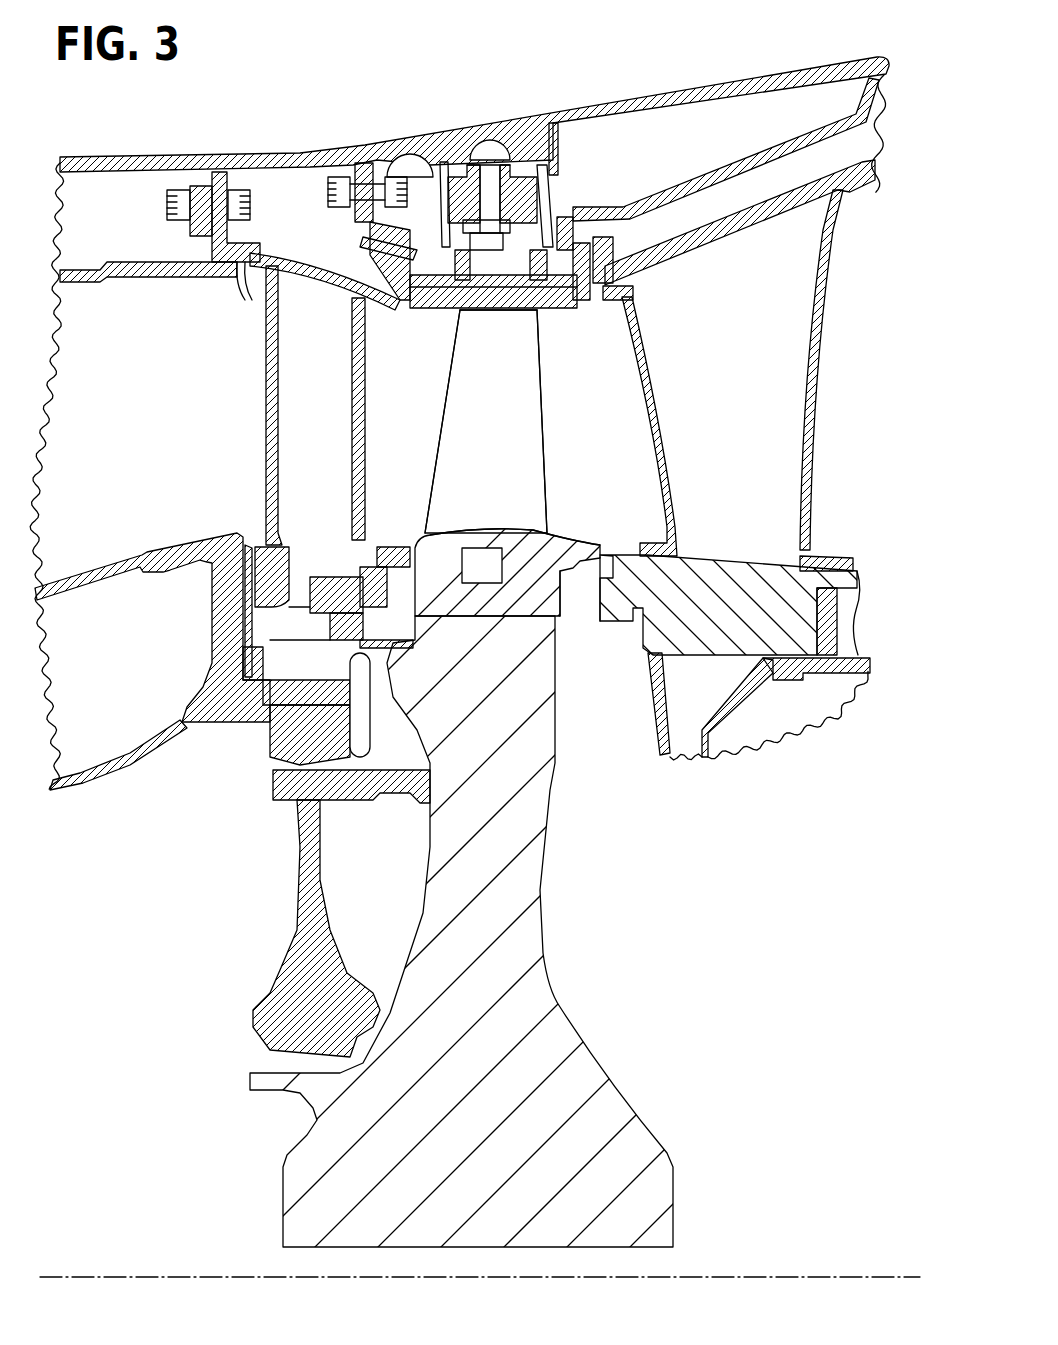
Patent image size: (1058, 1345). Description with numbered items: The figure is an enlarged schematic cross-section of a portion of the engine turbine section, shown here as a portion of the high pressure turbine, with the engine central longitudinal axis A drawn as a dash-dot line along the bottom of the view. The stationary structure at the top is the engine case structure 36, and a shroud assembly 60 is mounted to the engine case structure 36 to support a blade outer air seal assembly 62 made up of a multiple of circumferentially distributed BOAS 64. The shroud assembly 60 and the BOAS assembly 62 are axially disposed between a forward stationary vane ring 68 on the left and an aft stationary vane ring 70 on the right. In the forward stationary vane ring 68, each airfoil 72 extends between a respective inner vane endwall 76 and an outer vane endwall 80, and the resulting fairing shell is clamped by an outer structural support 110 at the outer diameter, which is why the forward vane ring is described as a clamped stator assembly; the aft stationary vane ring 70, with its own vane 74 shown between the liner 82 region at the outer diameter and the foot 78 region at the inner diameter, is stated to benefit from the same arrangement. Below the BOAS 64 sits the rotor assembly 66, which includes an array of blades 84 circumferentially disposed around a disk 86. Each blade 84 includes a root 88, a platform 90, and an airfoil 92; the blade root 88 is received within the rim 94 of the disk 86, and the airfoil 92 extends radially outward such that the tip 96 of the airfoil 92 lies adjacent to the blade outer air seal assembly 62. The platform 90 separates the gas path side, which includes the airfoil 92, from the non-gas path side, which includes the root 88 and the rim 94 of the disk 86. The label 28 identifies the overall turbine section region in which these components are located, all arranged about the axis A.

The engine case structure 36 is at (674, 94).
The turbine section 28 is at (898, 228).
The shroud assembly 60 is at (533, 215).
The outer structural support 110 is at (262, 248).
The outer vane endwall 80 is at (243, 273).
The inner liner band 82 is at (850, 190).
The forward stationary vane ring 68 is at (231, 448).
The airfoil 72 is at (306, 438).
The second vane 74 is at (731, 343).
The tip 96 is at (480, 312).
The BOAS 64 is at (535, 305).
The blade outer air seal (BOAS) assembly 62 is at (543, 320).
The blade 84 is at (476, 463).
The airfoil 92 is at (527, 455).
The aft stationary vane ring 70 is at (840, 443).
The platform 90 is at (575, 538).
The inner vane endwall 76 is at (243, 543).
The vane foot 78 is at (803, 558).
The root 88 is at (469, 578).
The rim 94 is at (567, 595).
The rotor assembly 66 is at (617, 879).
The disk 86 is at (530, 873).
The engine central longitudinal axis A is at (786, 1277).